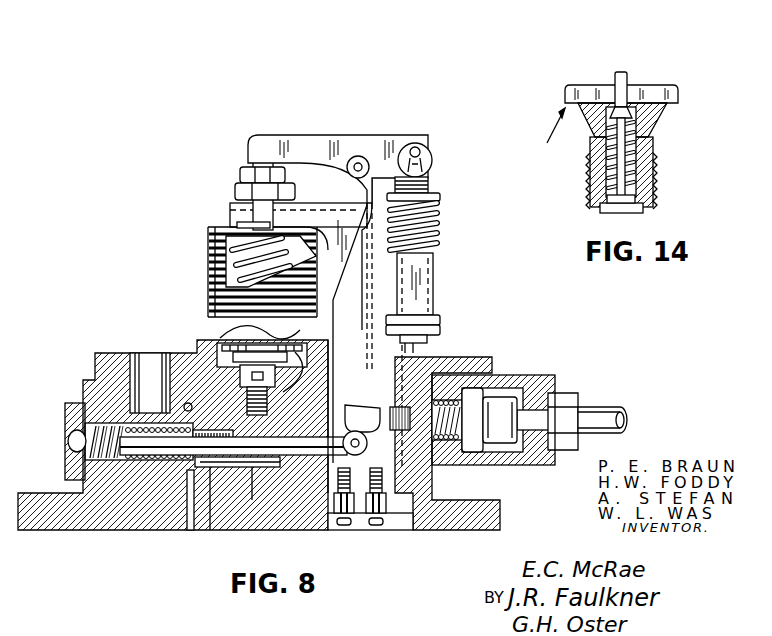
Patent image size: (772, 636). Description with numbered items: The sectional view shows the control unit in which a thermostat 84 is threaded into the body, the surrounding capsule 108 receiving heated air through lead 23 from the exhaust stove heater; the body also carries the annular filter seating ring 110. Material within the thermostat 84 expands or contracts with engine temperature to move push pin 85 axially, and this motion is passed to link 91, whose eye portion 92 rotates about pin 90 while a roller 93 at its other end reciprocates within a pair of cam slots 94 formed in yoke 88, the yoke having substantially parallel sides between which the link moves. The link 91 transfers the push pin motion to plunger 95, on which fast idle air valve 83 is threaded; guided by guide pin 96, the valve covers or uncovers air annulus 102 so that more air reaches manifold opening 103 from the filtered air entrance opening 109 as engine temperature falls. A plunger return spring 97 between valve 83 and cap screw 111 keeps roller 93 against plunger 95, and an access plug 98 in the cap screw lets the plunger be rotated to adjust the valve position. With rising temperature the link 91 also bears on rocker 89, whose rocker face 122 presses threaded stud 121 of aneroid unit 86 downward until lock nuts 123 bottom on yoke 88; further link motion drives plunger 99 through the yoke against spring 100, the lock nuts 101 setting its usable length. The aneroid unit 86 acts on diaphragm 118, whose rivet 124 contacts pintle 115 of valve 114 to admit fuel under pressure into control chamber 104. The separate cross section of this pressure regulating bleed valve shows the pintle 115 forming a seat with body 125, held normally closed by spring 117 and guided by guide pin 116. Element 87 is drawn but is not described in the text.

In FIG. 8, the lead 23 is at (592, 412).
In FIG. 8, the fast idle air valve 83 is at (211, 467).
In FIG. 8, the thermostat 84 is at (485, 421).
In FIG. 8, the push pin 85 is at (376, 418).
In FIG. 8, the aneroid unit 86 is at (230, 297).
In FIG. 8, the slanted bores 87 is at (215, 263).
In FIG. 8, the yoke 88 is at (358, 298).
In FIG. 8, the rocker 89 is at (314, 157).
In FIG. 8, the pin 90 is at (357, 156).
In FIG. 8, the link 91 is at (357, 198).
In FIG. 8, the eye portion 92 is at (372, 165).
In FIG. 8, the roller 93 is at (364, 450).
In FIG. 8, the cam slots 94 is at (375, 418).
In FIG. 8, the plunger 95 is at (272, 442).
In FIG. 8, the guide pin 96 is at (252, 468).
In FIG. 8, the plunger return spring 97 is at (127, 428).
In FIG. 8, the access plug 98 is at (72, 444).
In FIG. 8, the plunger 99 is at (418, 236).
In FIG. 8, the spring 100 is at (436, 216).
In FIG. 8, the lock nuts 101 is at (440, 331).
In FIG. 8, the air annulus 102 is at (188, 404).
In FIG. 8, the manifold opening 103 is at (190, 500).
In FIG. 8, the control chamber 104 is at (283, 392).
In FIG. 8, the capsule 108 is at (547, 455).
In FIG. 8, the filtered air entrance opening 109 is at (153, 367).
In FIG. 8, the annular filter seating ring 110 is at (108, 355).
In FIG. 8, the cap screw 111 is at (68, 405).
In FIG. 8, the valve 114 is at (232, 366).
In FIG. 14, the valve 114 is at (549, 136).
In FIG. 14, the pintle 115 is at (625, 80).
In FIG. 14, the guide pin 116 is at (652, 195).
In FIG. 14, the spring 117 is at (652, 160).
In FIG. 8, the diaphragm 118 is at (212, 338).
In FIG. 8, the threaded stud 121 is at (255, 224).
In FIG. 8, the rocker face 122 is at (245, 172).
In FIG. 8, the lock nuts 123 is at (238, 192).
In FIG. 8, the rivet 124 is at (225, 330).
In FIG. 14, the body 125 is at (655, 118).